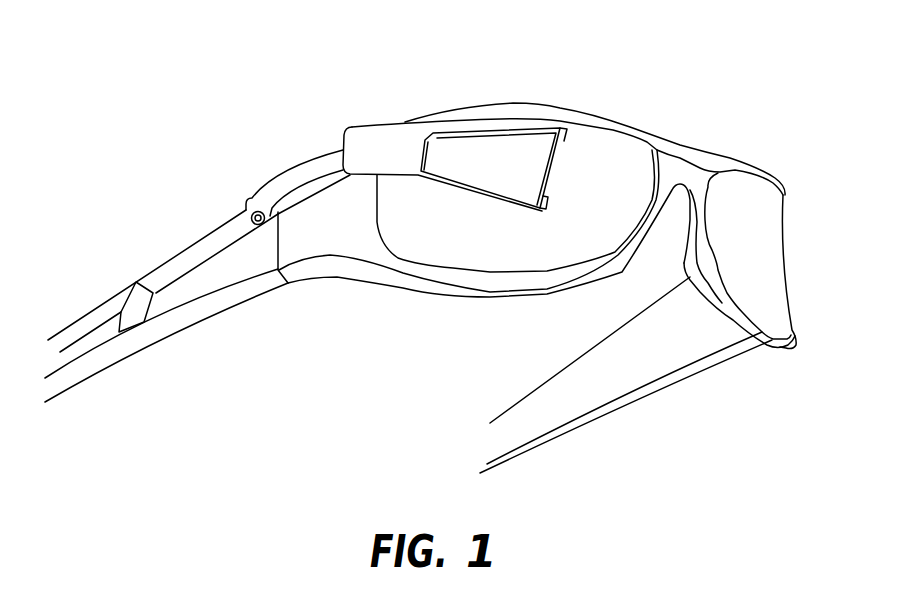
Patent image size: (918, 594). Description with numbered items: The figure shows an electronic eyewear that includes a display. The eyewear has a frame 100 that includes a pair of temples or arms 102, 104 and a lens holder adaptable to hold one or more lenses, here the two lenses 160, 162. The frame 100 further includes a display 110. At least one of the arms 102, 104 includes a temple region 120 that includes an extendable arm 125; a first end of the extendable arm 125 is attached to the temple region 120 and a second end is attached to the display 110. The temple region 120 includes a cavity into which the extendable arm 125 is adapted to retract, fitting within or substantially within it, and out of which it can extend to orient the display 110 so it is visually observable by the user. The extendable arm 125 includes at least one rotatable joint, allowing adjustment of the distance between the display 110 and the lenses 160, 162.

The frame 100 is at (733, 110).
The arm 102 is at (107, 348).
The arm 104 is at (657, 362).
The display 110 is at (483, 152).
The temple region 120 is at (166, 225).
The extendable arm 125 is at (220, 243).
The lens 160 is at (487, 257).
The lens 162 is at (773, 256).